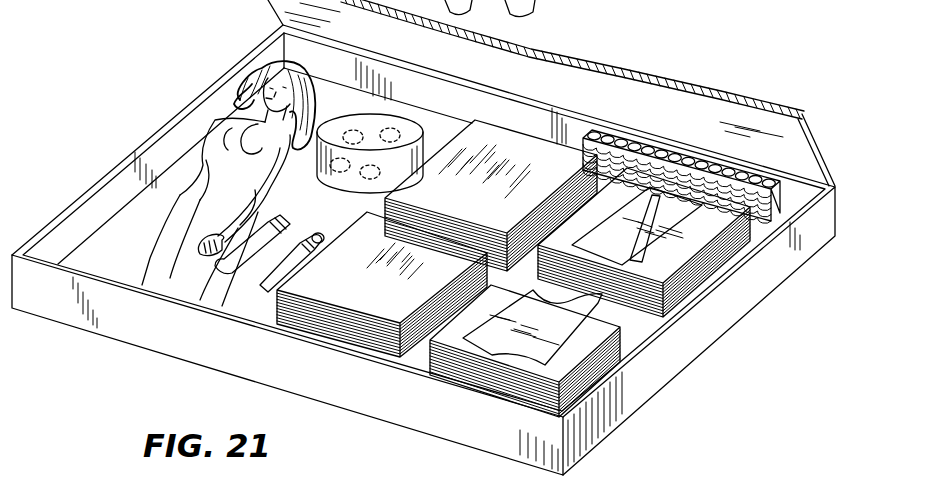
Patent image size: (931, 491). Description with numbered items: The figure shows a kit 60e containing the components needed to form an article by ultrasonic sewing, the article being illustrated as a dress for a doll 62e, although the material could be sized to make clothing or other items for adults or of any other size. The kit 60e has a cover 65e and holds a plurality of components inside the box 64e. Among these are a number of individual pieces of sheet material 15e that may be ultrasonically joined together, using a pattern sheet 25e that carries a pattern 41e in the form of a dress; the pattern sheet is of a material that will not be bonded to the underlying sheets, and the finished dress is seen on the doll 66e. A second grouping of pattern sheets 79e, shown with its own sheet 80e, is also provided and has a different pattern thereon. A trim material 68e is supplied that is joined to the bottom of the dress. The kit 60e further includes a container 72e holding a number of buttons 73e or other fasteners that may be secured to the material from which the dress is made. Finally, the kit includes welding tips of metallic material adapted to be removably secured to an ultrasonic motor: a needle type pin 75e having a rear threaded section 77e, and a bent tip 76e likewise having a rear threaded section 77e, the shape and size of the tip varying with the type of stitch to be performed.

The box 64e is at (710, 330).
The doll 66e is at (527, 147).
The kit 60e is at (623, 73).
The cover 65e is at (817, 145).
The doll 62e is at (193, 173).
The container 72e is at (378, 112).
The buttons 73e is at (388, 132).
The trim material 68e is at (732, 165).
The sheet material 15e is at (360, 323).
The pattern sheet 25e is at (483, 367).
The pattern 41e is at (605, 352).
The second grouping of pattern sheets 79e is at (737, 227).
The pattern sheet 80e is at (673, 263).
The bent tip 76e is at (219, 273).
The needle type pin 75e is at (259, 288).
The rear threaded section 77e is at (316, 234).